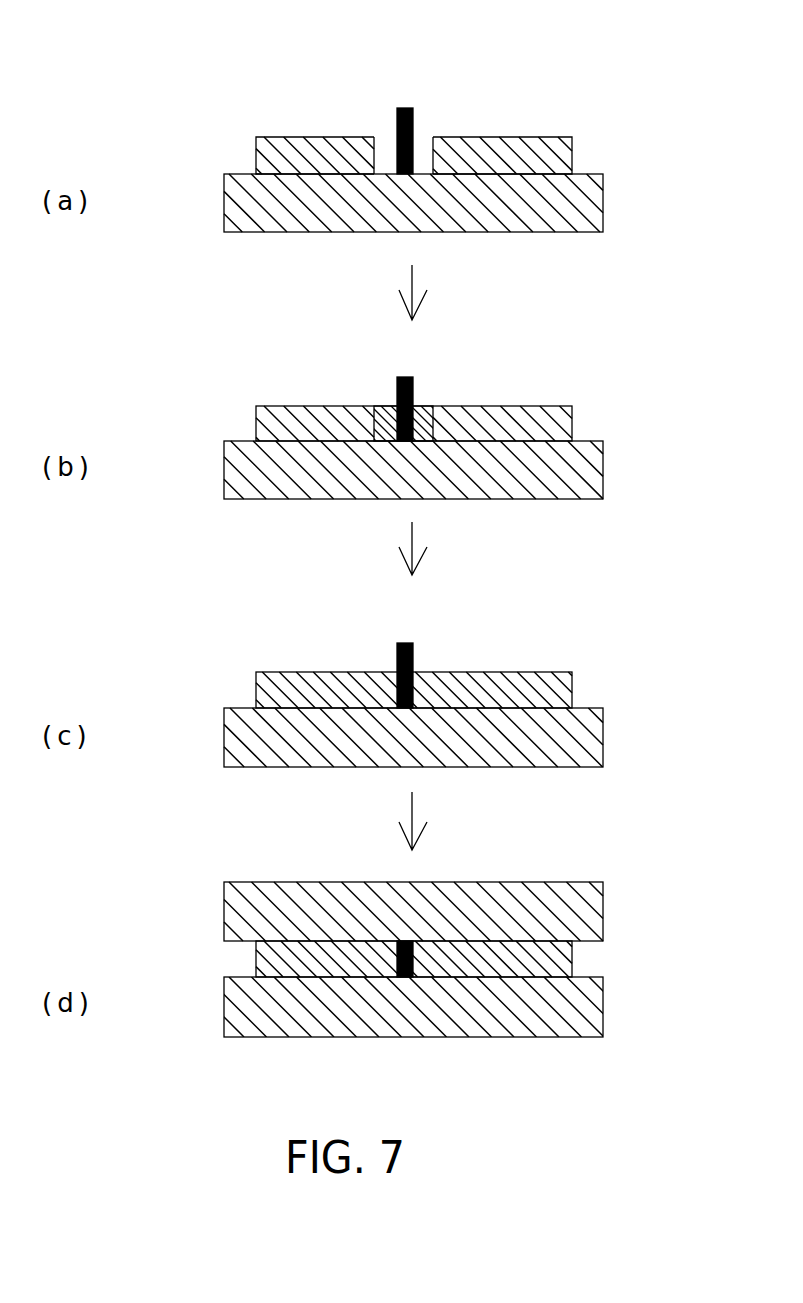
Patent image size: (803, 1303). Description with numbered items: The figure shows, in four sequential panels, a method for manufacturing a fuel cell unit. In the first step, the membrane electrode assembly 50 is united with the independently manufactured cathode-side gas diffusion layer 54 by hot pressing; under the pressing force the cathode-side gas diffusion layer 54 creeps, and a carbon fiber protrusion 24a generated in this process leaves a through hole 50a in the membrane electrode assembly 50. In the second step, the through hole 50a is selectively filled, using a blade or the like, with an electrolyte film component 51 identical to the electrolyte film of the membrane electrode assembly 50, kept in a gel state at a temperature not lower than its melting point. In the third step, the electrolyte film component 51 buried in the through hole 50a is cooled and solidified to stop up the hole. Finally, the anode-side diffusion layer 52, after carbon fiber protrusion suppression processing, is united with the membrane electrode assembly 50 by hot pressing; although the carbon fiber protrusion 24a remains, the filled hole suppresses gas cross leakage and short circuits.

The carbon fiber protrusion 24a is at (413, 117).
The membrane electrode assembly 50 is at (522, 148).
The through hole 50a is at (373, 155).
The electrolyte film component 51 is at (392, 405).
The anode-side diffusion layer 52 is at (533, 907).
The cathode-side gas diffusion layer 54 is at (537, 208).